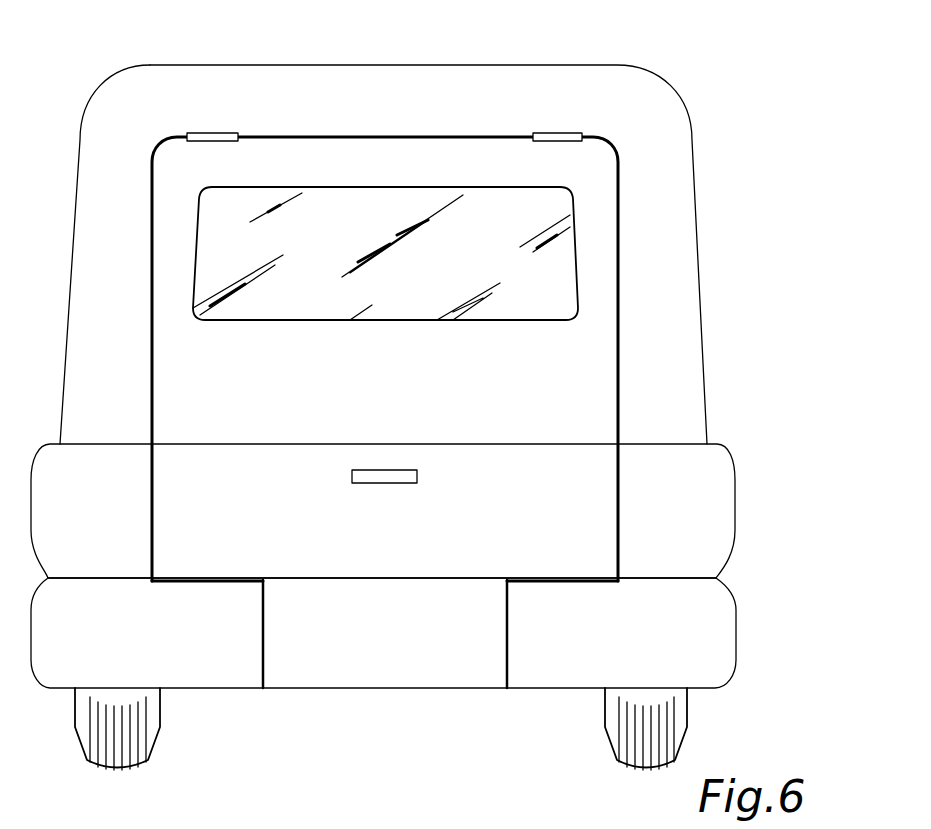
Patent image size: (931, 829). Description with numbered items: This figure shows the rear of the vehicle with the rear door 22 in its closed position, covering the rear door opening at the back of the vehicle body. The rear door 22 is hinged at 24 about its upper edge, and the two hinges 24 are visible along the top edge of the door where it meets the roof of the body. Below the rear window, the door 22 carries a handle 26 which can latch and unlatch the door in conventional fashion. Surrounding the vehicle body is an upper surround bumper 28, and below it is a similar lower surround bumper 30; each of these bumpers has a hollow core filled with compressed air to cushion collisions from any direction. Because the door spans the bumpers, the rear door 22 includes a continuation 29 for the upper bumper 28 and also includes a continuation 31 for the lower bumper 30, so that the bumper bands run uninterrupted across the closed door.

The rear door 22 is at (620, 270).
The hinge 24 is at (193, 133).
The handle 26 is at (410, 472).
The upper surround bumper 28 is at (733, 518).
The continuation for the upper bumper 29 is at (565, 483).
The lower surround bumper 30 is at (737, 662).
The continuation for the lower bumper 31 is at (452, 640).